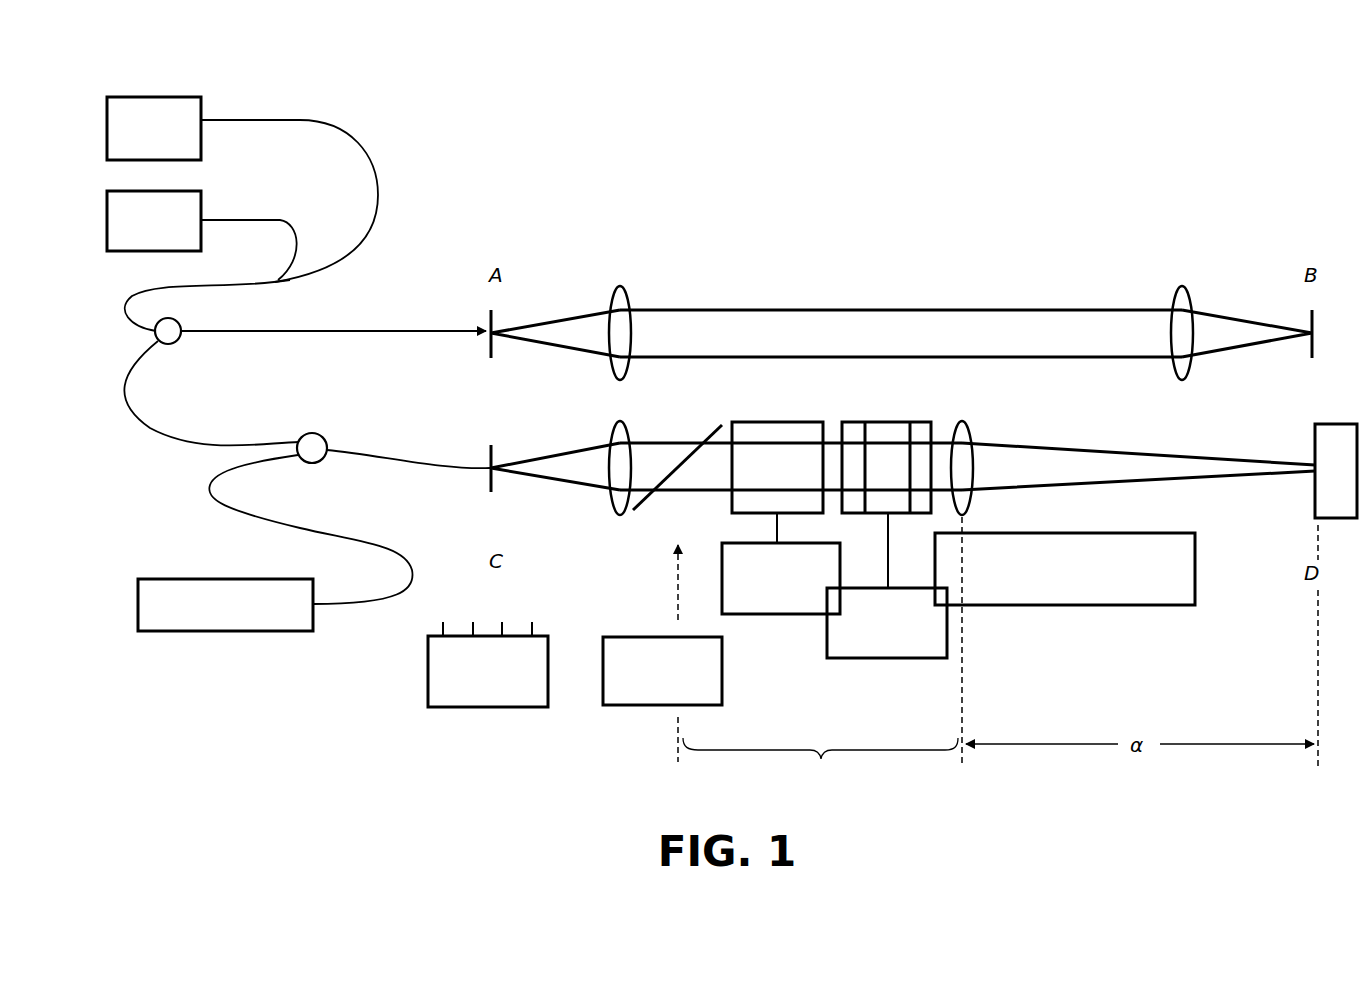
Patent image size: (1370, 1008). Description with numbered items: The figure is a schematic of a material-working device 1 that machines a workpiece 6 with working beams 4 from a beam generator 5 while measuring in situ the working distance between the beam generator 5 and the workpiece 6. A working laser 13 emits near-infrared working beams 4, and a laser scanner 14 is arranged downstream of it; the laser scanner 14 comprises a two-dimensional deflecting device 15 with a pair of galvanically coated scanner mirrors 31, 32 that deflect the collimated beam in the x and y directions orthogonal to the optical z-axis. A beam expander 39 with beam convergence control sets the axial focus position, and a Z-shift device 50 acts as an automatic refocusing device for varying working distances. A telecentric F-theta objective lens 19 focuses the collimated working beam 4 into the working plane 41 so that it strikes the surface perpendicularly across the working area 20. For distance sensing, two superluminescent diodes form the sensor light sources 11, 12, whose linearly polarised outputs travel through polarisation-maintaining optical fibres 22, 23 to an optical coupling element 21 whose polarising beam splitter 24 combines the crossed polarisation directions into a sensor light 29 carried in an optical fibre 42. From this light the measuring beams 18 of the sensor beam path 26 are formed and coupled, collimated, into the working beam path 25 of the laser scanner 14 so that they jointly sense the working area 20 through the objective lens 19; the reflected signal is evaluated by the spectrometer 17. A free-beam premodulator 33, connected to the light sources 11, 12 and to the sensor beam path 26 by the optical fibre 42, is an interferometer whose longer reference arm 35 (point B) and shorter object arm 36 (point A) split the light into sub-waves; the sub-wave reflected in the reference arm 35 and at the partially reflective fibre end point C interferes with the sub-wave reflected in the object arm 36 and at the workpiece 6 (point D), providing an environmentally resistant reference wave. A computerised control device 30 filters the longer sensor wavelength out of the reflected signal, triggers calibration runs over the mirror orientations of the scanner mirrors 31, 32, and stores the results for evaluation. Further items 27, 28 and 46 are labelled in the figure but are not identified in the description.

The material-working device 1 is at (990, 134).
The working beams 4 is at (1130, 444).
The beam generator 5 is at (820, 762).
The workpiece 6 is at (1310, 476).
The sensor light source 11 is at (195, 212).
The sensor light source 12 is at (195, 110).
The working laser 13 is at (638, 695).
The laser scanner 14 is at (880, 660).
The two-dimensional deflecting device 15 is at (881, 412).
The spectrometer 17 is at (236, 583).
The measuring beams 18 is at (550, 345).
The objective lens 19 is at (1070, 607).
The working area 20 is at (1312, 458).
The optical coupling element 21 is at (163, 342).
The polarisation-maintaining optical fibre 22 is at (298, 121).
The polarisation-maintaining optical fibre 23 is at (288, 252).
The polarising beam splitter 24 is at (184, 322).
The working beam path 25 is at (832, 495).
The sensor beam path 26 is at (935, 308).
The dichroic beam splitter 27 is at (678, 478).
The laser beam 28 is at (676, 590).
The sensor light 29 is at (350, 328).
The computerised control device 30 is at (487, 716).
The scanner mirror 31 is at (852, 422).
The scanner mirror 32 is at (921, 422).
The premodulator 33 is at (1090, 410).
The reference arm 35 is at (1043, 305).
The object arm 36 is at (1000, 438).
The beam expander 39 is at (612, 500).
The working plane 41 is at (1312, 500).
The optical fibre 42 is at (275, 335).
The reference arm 46 is at (558, 248).
The Z-shift device 50 is at (800, 616).